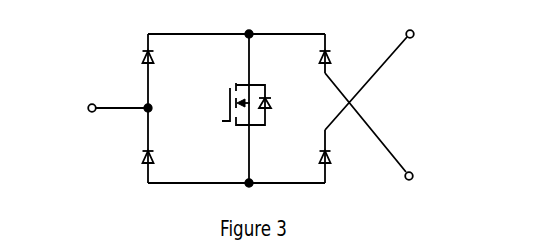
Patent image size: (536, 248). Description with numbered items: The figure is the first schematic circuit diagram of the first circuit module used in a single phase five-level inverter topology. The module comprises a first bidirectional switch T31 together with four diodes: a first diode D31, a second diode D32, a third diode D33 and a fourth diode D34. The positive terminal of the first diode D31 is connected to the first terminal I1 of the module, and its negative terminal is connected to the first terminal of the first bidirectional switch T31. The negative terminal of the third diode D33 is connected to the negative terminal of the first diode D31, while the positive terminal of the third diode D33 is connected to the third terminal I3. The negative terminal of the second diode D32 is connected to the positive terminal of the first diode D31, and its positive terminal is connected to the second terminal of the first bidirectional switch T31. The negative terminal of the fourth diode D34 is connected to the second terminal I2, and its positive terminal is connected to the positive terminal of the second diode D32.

The first diode D31 is at (175, 59).
The second diode D32 is at (175, 159).
The third diode D33 is at (349, 53).
The fourth diode D34 is at (349, 160).
The first bidirectional switch T31 is at (224, 106).
The first terminal I1 is at (79, 106).
The second terminal I2 is at (426, 37).
The third terminal I3 is at (425, 179).